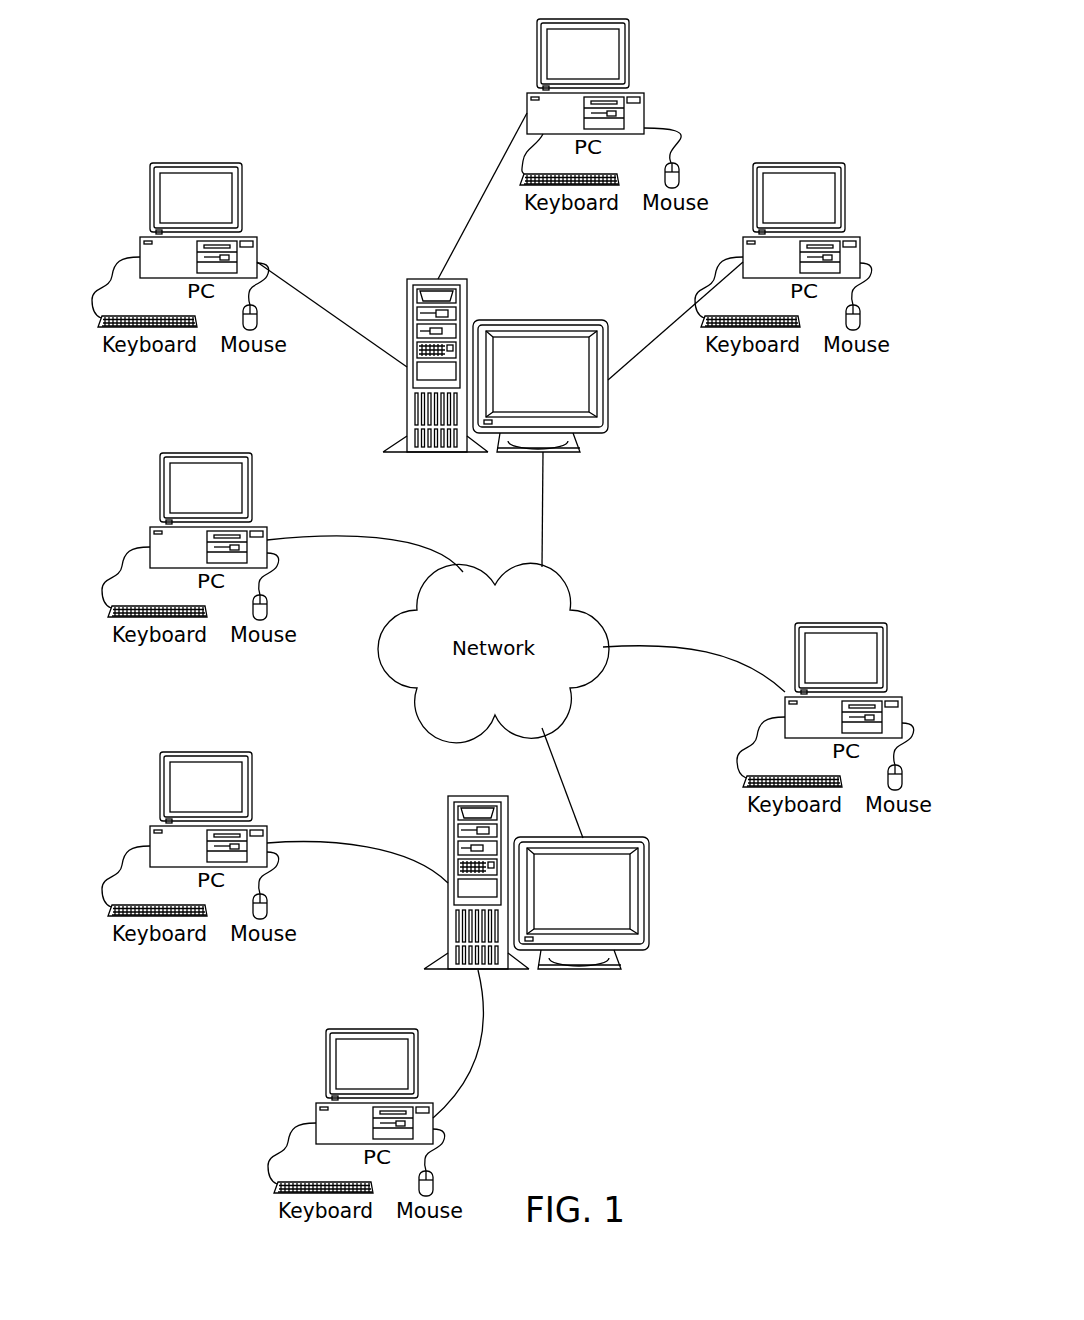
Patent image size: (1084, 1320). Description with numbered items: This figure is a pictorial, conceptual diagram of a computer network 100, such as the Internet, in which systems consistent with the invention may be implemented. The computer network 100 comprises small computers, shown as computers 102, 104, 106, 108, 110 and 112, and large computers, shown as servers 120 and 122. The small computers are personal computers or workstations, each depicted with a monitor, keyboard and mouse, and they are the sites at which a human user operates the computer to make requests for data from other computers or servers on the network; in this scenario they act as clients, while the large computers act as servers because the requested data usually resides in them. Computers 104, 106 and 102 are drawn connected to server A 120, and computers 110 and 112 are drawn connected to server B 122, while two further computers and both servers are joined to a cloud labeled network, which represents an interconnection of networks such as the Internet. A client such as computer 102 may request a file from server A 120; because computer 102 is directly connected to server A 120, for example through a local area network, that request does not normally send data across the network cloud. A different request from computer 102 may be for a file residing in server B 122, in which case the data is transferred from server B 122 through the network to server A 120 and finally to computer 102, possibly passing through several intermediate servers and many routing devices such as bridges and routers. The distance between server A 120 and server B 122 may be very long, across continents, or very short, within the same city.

The computer network 100 is at (755, 90).
The computer 102 is at (861, 237).
The computer 104 is at (643, 95).
The computer 106 is at (251, 237).
The computer 108 is at (843, 621).
The computer 110 is at (174, 751).
The computer 112 is at (325, 1046).
The server A 120 is at (608, 408).
The server B 122 is at (650, 893).